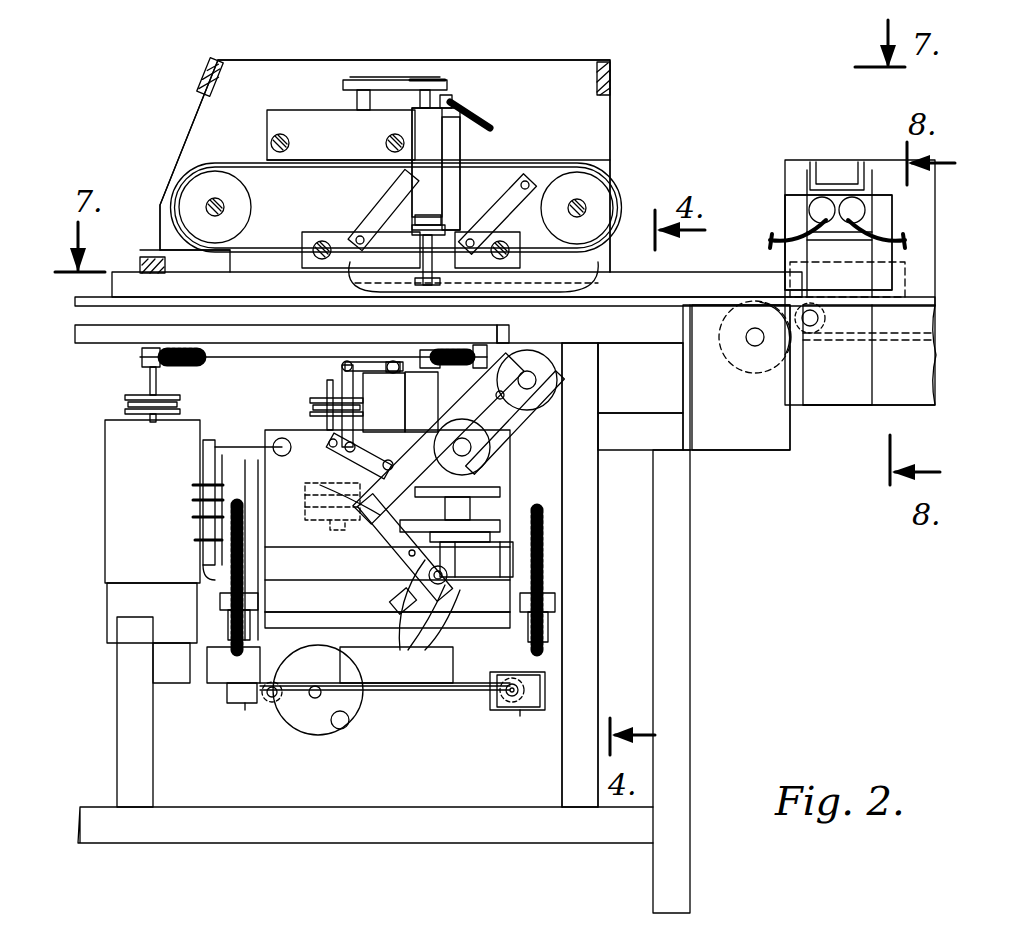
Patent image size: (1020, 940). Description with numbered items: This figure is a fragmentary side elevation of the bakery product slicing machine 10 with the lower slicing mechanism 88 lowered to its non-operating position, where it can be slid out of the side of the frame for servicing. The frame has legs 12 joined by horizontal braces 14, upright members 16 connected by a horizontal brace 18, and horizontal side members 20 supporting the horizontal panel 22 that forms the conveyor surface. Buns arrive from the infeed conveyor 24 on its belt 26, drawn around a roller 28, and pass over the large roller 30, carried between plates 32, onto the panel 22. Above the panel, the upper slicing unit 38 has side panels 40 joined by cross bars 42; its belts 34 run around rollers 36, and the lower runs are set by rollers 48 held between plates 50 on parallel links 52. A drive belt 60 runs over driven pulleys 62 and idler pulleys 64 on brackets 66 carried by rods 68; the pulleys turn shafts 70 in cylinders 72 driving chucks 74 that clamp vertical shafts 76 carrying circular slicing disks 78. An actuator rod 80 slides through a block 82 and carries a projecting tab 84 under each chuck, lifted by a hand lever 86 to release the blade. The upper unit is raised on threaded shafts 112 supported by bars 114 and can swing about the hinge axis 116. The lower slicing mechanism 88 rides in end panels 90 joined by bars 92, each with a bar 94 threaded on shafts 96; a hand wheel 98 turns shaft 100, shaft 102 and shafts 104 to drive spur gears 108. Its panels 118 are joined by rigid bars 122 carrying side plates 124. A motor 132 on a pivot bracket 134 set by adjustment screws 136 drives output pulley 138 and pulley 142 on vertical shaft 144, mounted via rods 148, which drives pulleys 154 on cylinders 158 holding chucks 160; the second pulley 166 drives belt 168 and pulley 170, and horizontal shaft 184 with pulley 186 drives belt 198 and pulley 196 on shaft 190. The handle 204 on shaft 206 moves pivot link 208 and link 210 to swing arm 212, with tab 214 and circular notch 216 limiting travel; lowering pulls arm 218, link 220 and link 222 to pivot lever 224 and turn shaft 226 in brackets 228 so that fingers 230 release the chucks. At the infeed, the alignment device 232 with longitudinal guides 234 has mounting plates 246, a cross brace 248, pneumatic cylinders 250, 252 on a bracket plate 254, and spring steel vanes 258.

The machine 10 is at (150, 112).
The legs 12 is at (680, 704).
The horizontal braces 14 is at (420, 845).
The upright members 16 is at (150, 783).
The horizontal brace 18 is at (400, 690).
The horizontal side members 20 is at (675, 340).
The horizontal panel 22 is at (660, 272).
The infeed conveyor 24 is at (912, 218).
The belt 26 is at (890, 305).
The roller 28 is at (815, 330).
The large roller 30 is at (790, 350).
The plates 32 is at (730, 440).
The belts 34 is at (240, 250).
The rollers 36 is at (200, 185).
The upper slicing unit 38 is at (648, 124).
The side panels 40 is at (596, 110).
The cross bars 42 is at (200, 72).
The rollers 48 is at (318, 240).
The plates 50 is at (335, 235).
The parallel links 52 is at (385, 195).
The drive belt 60 is at (385, 80).
The driven pulleys 62 is at (425, 78).
The idler pulleys 64 is at (355, 80).
The brackets 66 is at (305, 122).
The rods 68 is at (272, 139).
The shafts 70 is at (448, 80).
The cylinders 72 is at (442, 140).
The chuck 74 is at (424, 215).
The vertical shaft 76 is at (420, 244).
The circular slicing disk 78 is at (570, 270).
The actuator rod 80 is at (452, 100).
The block 82 is at (452, 132).
The projecting tab 84 is at (455, 190).
The hand lever 86 is at (480, 120).
The lower slicing mechanism 88 is at (605, 498).
The end panels 90 is at (245, 612).
The bars 92 is at (318, 690).
The bar 94 is at (228, 602).
The threaded shafts 96 is at (230, 570).
The hand wheel 98 is at (347, 722).
The shaft 100 is at (315, 700).
The shaft 102 is at (450, 692).
The shafts 104 is at (272, 702).
The spur gears 108 is at (240, 700).
The threaded shafts 112 is at (190, 305).
The bars 114 is at (150, 335).
The horizontal hinge axis 116 is at (142, 262).
The panels 118 is at (290, 604).
The rigid bars 122 is at (340, 580).
The side plates 124 is at (215, 540).
The motor 132 is at (120, 560).
The pivot bracket 134 is at (232, 445).
The adjustment screws 136 is at (193, 515).
The output pulley 138 is at (135, 404).
The pulley 142 is at (318, 400).
The vertical shaft 144 is at (327, 412).
The horizontal rods 148 is at (215, 447).
The pulleys 154 is at (470, 490).
The cylinders 158 is at (420, 400).
The chucks 160 is at (490, 335).
The second pulley 166 is at (318, 525).
The belt 168 is at (476, 559).
The pulley 170 is at (485, 500).
The horizontal shaft 184 is at (485, 445).
The pulley 186 is at (478, 455).
The shaft 190 is at (540, 370).
The pulley 196 is at (538, 383).
The belt 198 is at (545, 415).
The handle 204 is at (455, 680).
The horizontal shaft 206 is at (455, 595).
The pivot link 208 is at (405, 650).
The link 210 is at (398, 548).
The arm 212 is at (330, 475).
The projecting tab 214 is at (510, 575).
The circular notch 216 is at (372, 530).
The arm 218 is at (485, 390).
The link 220 is at (345, 462).
The link 222 is at (342, 380).
The lever 224 is at (372, 365).
The horizontal shaft 226 is at (395, 360).
The brackets 228 is at (385, 402).
The projecting fingers 230 is at (438, 343).
The alignment device 232 is at (800, 120).
The longitudinal guides 234 is at (905, 280).
The mounting plates 246 is at (865, 402).
The cross brace 248 is at (815, 160).
The pneumatic cylinder 250 is at (855, 200).
The pneumatic cylinder 252 is at (815, 208).
The bracket plate 254 is at (800, 235).
The vane 258 is at (797, 182).